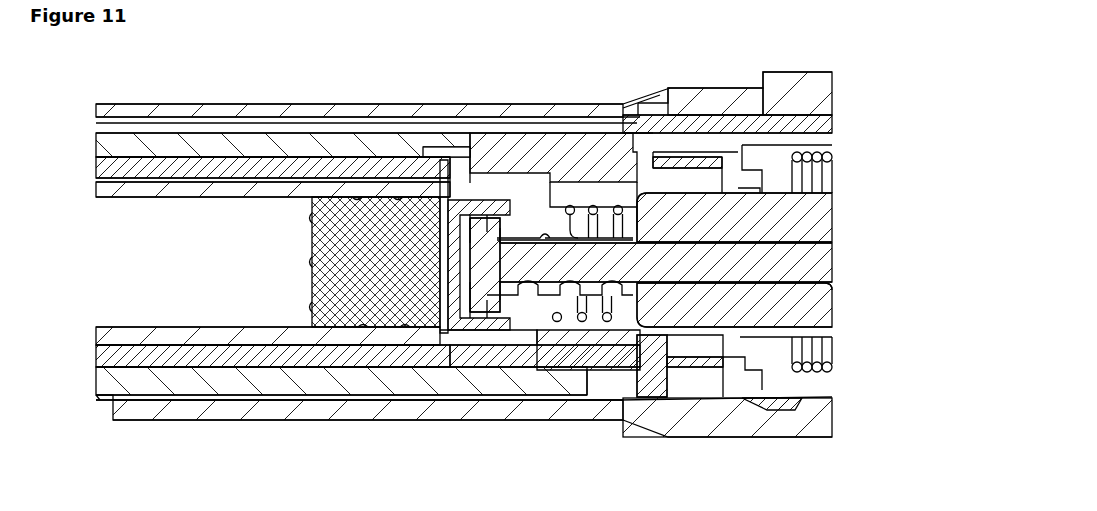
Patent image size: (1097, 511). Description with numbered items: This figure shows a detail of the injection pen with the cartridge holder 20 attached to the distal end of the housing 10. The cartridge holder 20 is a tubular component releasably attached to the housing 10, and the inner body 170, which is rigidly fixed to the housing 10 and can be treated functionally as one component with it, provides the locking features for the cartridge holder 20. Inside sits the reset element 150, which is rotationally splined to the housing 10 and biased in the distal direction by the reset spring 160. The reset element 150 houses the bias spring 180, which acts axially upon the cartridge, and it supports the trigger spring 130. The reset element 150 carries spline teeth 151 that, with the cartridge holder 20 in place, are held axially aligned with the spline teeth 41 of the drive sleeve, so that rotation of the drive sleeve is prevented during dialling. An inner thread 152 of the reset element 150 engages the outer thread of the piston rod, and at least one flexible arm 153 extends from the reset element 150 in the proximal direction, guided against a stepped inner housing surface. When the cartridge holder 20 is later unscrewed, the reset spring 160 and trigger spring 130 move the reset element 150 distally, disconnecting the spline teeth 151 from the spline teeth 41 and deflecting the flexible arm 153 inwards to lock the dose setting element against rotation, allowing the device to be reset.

The housing 10 is at (212, 410).
The cartridge holder 20 is at (127, 357).
The inner body 170 is at (272, 380).
The bias spring 180 is at (460, 183).
The reset element 150 is at (572, 163).
The trigger spring 130 is at (592, 207).
The inner thread 152 is at (530, 292).
The reset spring 160 is at (708, 158).
The spline teeth 41 is at (642, 332).
The spline teeth 151 is at (650, 333).
The flexible arm 153 is at (792, 402).